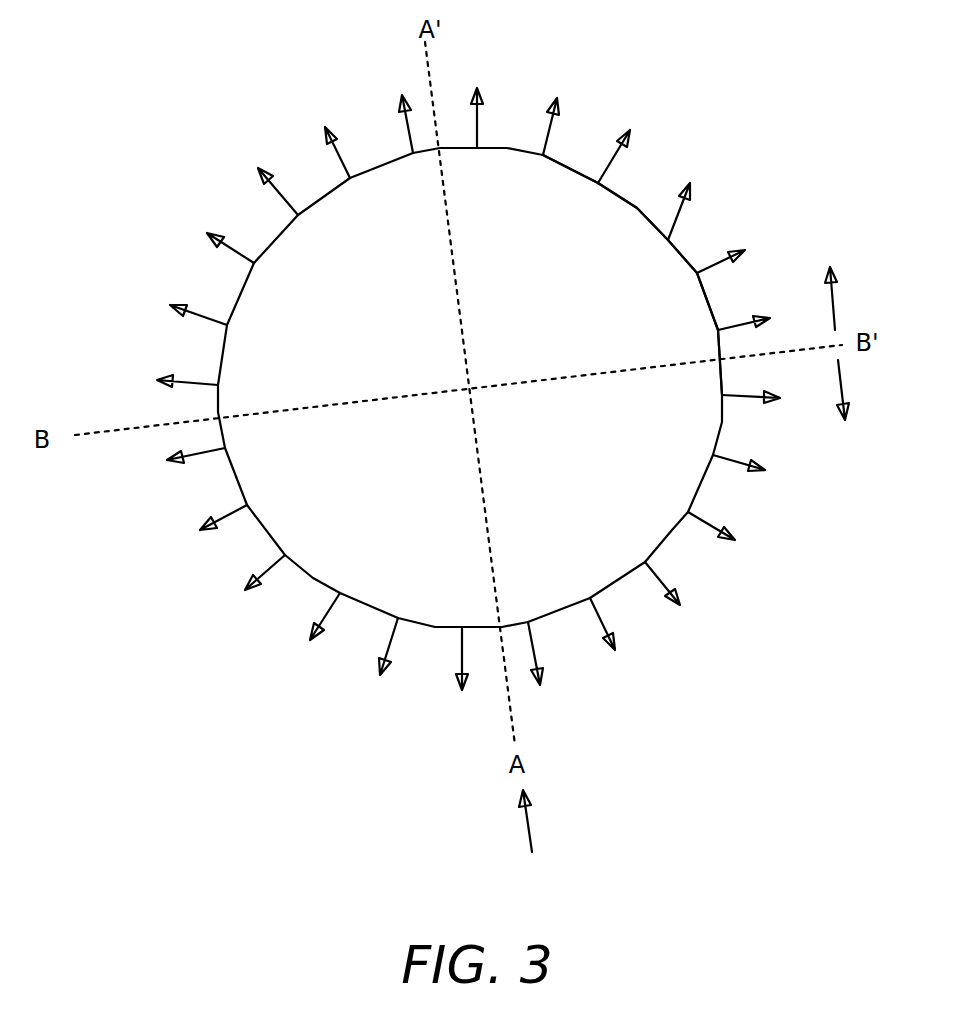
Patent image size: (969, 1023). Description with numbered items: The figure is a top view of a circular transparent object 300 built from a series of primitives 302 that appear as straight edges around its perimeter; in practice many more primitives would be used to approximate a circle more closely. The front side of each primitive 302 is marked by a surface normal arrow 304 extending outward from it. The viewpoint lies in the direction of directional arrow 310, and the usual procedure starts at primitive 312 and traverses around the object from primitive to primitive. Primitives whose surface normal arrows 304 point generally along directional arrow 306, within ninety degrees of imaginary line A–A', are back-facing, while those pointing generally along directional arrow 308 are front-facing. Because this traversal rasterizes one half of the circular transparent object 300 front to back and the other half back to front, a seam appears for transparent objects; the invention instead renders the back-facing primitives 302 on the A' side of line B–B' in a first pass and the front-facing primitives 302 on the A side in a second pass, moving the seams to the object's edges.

The circular transparent object 300 is at (697, 563).
The primitive 302 is at (713, 322).
The surface normal arrow 304 is at (230, 247).
The directional arrow 306 is at (837, 310).
The directional arrow 308 is at (842, 375).
The directional arrow 310 is at (528, 818).
The primitive 312 is at (470, 626).